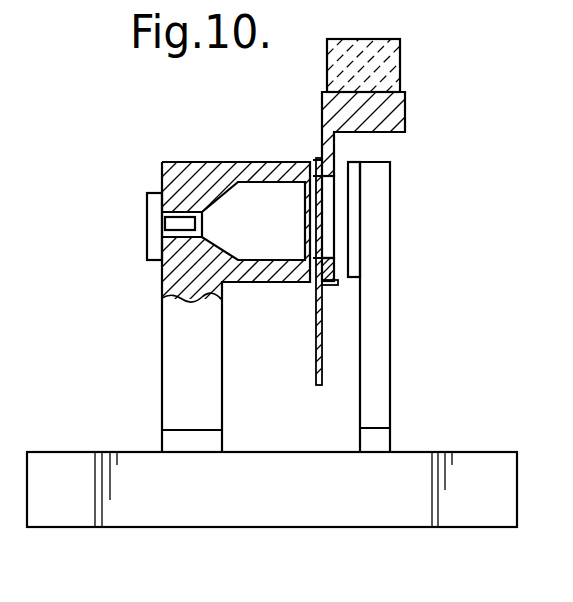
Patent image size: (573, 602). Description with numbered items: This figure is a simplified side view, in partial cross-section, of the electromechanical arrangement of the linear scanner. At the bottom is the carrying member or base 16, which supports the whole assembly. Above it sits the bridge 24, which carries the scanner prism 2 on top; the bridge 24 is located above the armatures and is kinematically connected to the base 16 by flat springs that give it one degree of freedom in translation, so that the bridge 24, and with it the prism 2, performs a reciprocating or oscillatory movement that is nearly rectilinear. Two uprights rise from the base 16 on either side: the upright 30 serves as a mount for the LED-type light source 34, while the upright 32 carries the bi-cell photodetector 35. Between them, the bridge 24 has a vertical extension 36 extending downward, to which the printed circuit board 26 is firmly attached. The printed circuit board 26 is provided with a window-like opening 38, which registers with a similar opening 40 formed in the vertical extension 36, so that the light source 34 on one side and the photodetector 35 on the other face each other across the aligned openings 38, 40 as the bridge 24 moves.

The scanner prism 2 is at (398, 50).
The bridge 24 is at (397, 117).
The upright 30 is at (218, 162).
The LED-type light source 34 is at (152, 240).
The opening 40 is at (328, 192).
The upright 32 is at (378, 222).
The window-like opening 38 is at (320, 240).
The bi-cell photodetector 35 is at (355, 257).
The vertical extension 36 is at (333, 279).
The printed circuit board 26 is at (317, 358).
The base 16 is at (458, 497).